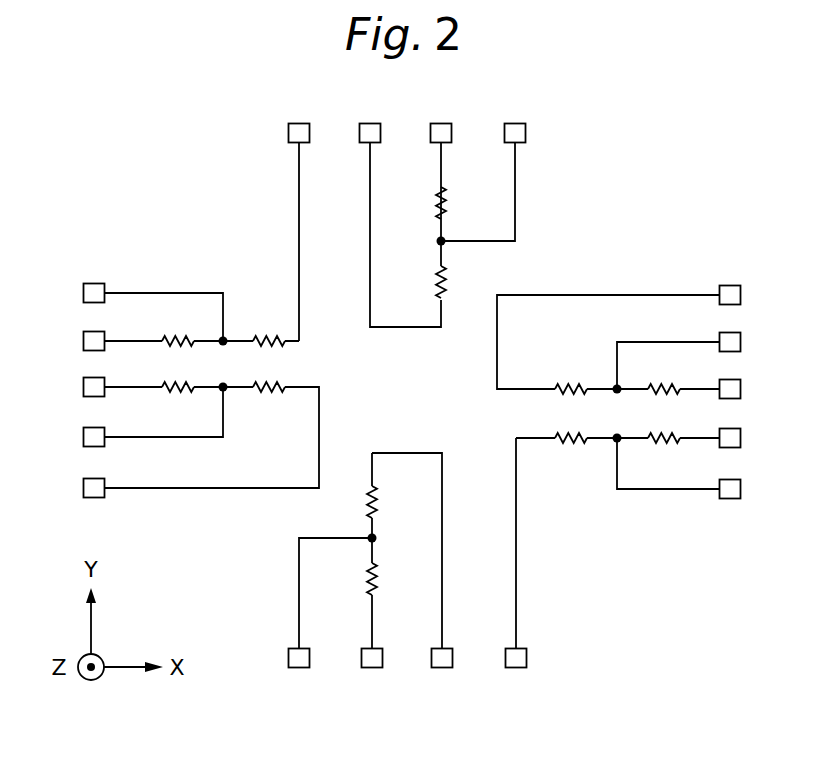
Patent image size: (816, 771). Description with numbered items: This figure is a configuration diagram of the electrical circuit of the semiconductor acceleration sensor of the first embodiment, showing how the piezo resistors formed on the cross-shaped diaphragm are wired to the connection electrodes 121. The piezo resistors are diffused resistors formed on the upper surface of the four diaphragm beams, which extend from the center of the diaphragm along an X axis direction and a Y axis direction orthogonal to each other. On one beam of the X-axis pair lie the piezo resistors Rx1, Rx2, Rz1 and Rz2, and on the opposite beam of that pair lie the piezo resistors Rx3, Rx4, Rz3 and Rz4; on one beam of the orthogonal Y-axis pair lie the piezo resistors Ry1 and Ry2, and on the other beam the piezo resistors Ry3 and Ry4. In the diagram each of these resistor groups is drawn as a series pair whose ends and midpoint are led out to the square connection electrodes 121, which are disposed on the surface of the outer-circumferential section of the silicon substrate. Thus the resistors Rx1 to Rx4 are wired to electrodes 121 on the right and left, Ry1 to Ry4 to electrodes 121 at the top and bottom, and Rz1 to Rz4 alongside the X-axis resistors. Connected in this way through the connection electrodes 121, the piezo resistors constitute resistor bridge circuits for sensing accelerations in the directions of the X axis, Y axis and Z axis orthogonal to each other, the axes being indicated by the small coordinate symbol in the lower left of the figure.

The connection electrode 121 is at (306, 125).
The piezo resistor Rx1 is at (663, 386).
The piezo resistor Rx2 is at (562, 385).
The piezo resistor Rx3 is at (270, 392).
The piezo resistor Rx4 is at (170, 390).
The piezo resistor Ry1 is at (447, 205).
The piezo resistor Ry2 is at (447, 285).
The piezo resistor Ry3 is at (380, 503).
The piezo resistor Ry4 is at (380, 578).
The piezo resistor Rz1 is at (663, 442).
The piezo resistor Rz2 is at (568, 445).
The piezo resistor Rz3 is at (262, 338).
The piezo resistor Rz4 is at (170, 338).